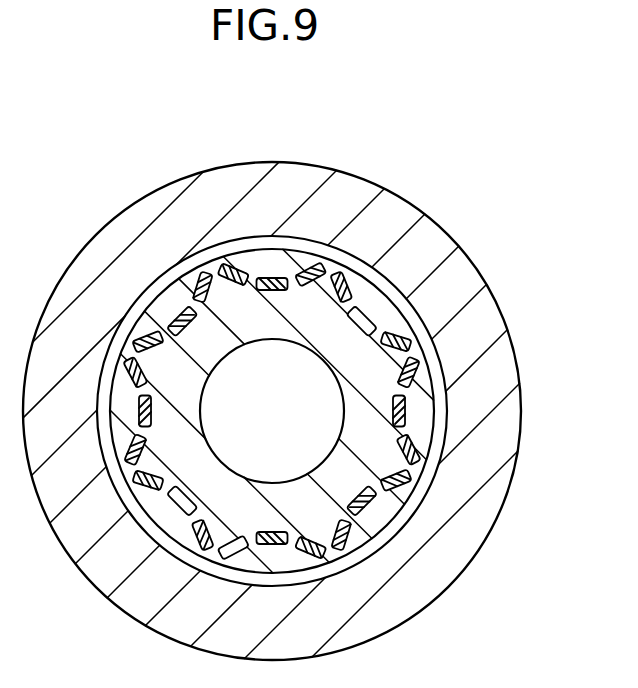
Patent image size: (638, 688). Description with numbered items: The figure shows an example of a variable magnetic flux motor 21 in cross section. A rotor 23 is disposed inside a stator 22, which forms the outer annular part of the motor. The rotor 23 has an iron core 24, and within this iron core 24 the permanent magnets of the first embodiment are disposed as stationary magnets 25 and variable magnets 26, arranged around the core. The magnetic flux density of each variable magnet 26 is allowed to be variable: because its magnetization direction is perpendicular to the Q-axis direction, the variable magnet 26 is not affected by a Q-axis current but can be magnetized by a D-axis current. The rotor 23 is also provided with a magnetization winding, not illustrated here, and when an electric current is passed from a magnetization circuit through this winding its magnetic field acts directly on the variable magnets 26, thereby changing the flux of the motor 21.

The variable magnetic flux motor 21 is at (460, 167).
The stator 22 is at (508, 497).
The rotor 23 is at (502, 216).
The iron core 24 is at (392, 325).
The stationary magnets 25 is at (428, 349).
The variable magnets 26 is at (426, 394).